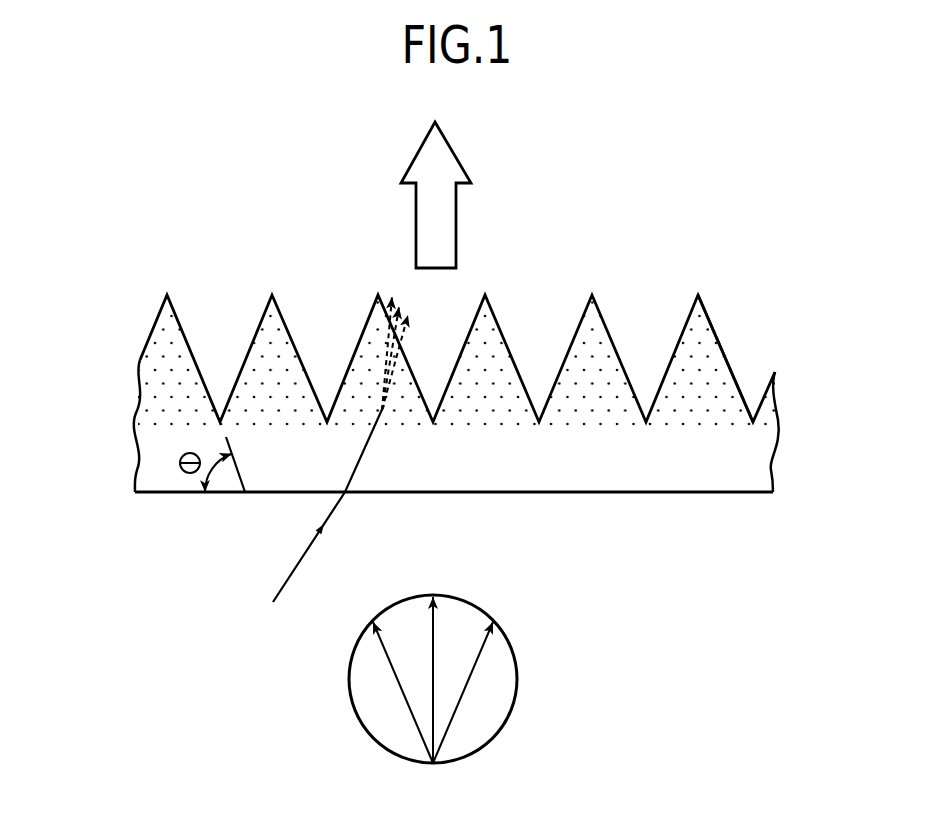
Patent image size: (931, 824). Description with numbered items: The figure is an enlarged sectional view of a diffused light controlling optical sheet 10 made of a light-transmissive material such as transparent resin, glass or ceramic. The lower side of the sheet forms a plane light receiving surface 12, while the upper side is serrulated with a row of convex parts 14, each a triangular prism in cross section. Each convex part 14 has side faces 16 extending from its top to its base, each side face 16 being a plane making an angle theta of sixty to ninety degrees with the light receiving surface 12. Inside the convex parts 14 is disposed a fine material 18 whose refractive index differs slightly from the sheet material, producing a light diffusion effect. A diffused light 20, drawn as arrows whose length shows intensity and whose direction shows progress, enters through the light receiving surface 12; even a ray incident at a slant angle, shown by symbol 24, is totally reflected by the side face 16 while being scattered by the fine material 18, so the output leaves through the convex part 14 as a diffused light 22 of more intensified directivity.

The diffused light controlling optical sheet 10 is at (455, 343).
The light receiving surface 12 is at (608, 493).
The convex part 14 is at (600, 315).
The side face 16 is at (733, 372).
The fine material 18 is at (705, 353).
The diffused light 20 is at (517, 682).
The diffused light 22 is at (456, 222).
The slant incident light 24 is at (303, 560).